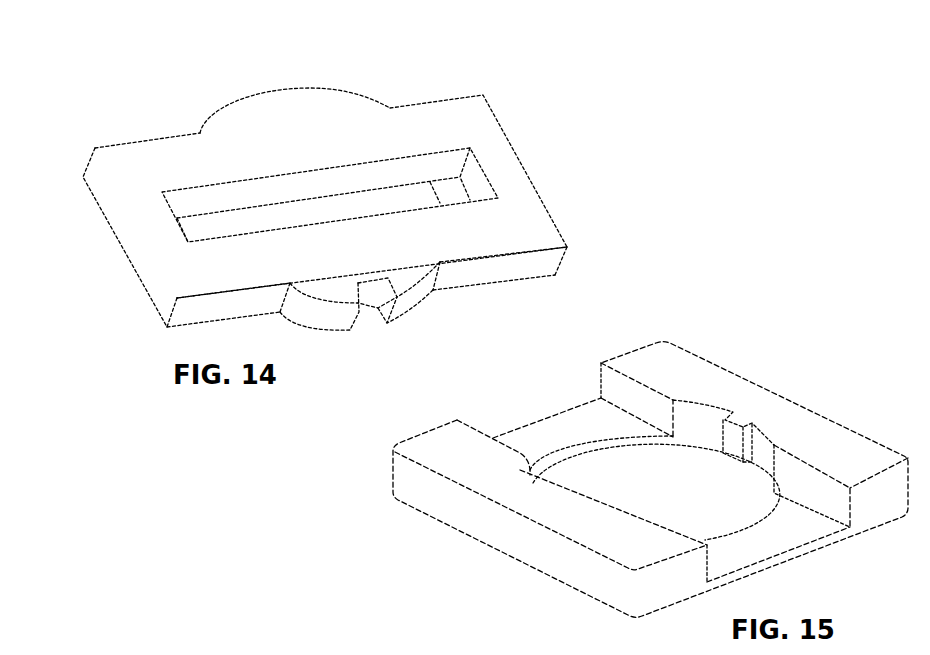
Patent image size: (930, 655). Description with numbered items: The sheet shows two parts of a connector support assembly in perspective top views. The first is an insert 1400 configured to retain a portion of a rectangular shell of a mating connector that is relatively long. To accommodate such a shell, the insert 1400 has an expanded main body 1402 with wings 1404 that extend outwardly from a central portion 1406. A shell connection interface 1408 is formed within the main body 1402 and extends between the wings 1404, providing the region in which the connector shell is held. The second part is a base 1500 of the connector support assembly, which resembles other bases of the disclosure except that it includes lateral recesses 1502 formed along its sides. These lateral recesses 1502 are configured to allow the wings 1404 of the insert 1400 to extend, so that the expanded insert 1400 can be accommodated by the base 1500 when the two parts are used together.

In FIG. 14, the insert 1400 is at (336, 176).
In FIG. 14, the main body 1402 is at (488, 127).
In FIG. 14, the wings 1404 is at (150, 278).
In FIG. 14, the central portion 1406 is at (313, 105).
In FIG. 14, the shell connection interface 1408 is at (195, 215).
In FIG. 15, the base 1500 is at (650, 475).
In FIG. 15, the lateral recesses 1502 is at (553, 428).